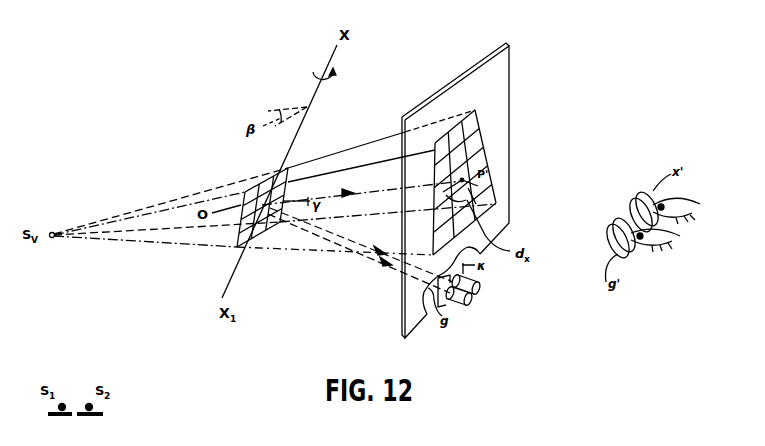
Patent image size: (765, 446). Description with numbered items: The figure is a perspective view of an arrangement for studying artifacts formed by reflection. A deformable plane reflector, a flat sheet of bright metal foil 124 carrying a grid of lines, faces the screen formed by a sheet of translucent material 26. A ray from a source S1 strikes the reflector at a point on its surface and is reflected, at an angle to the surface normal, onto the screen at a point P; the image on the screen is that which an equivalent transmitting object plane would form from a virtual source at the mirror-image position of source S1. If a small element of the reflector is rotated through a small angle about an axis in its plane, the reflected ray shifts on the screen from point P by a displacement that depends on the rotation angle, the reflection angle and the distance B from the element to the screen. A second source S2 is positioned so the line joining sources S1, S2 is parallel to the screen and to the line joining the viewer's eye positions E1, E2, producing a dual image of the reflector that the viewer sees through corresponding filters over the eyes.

The flat sheet of bright metal foil 124 is at (240, 227).
The sheet of translucent material 26 is at (511, 123).
The distance from the element to the screen B is at (362, 190).
The point on the screen P is at (460, 183).
The source S1 is at (462, 303).
The second source S2 is at (475, 288).
The eye position E1 is at (641, 245).
The eye position E2 is at (669, 215).